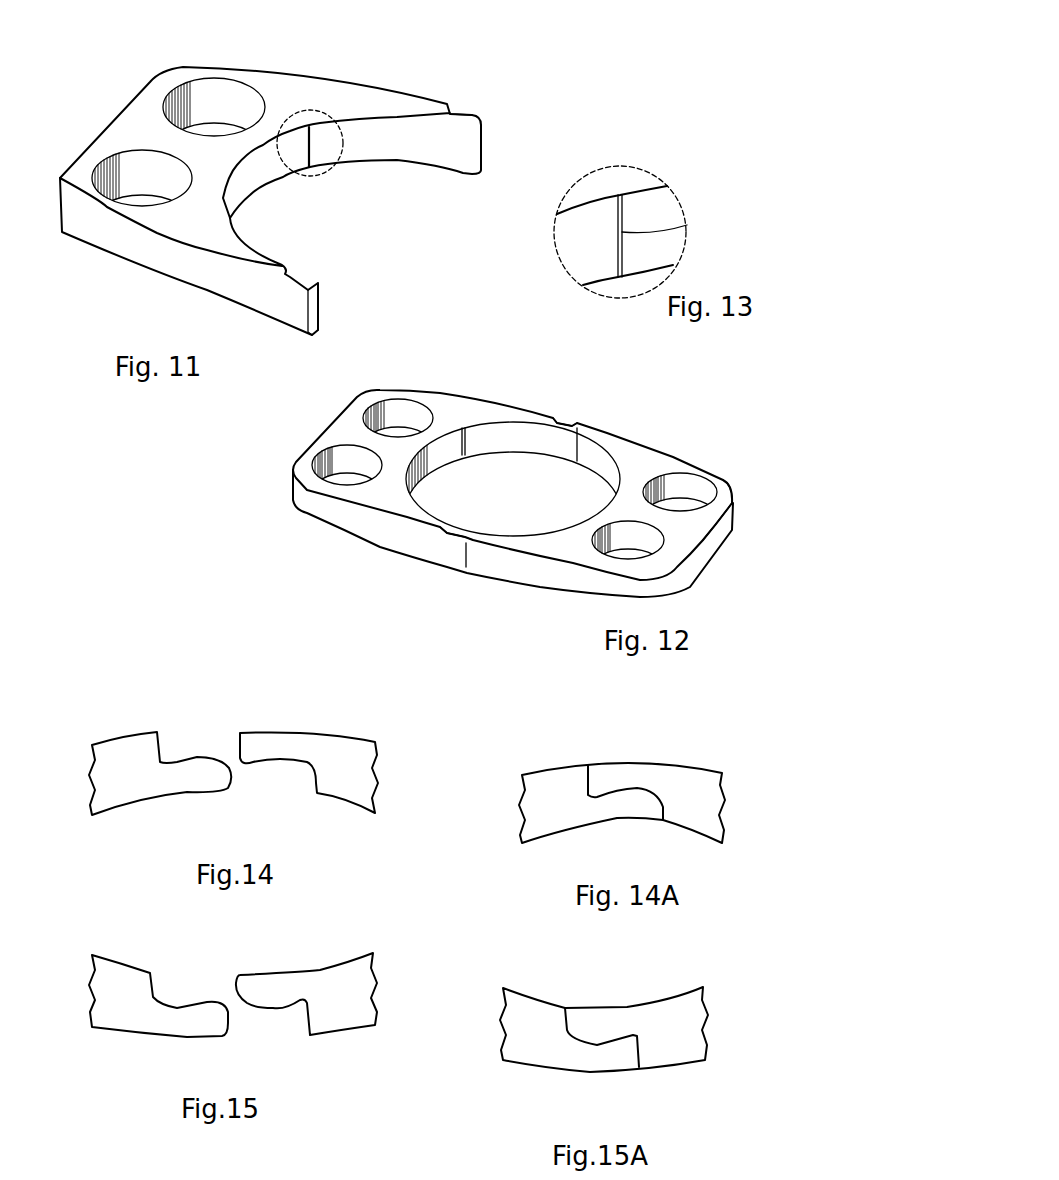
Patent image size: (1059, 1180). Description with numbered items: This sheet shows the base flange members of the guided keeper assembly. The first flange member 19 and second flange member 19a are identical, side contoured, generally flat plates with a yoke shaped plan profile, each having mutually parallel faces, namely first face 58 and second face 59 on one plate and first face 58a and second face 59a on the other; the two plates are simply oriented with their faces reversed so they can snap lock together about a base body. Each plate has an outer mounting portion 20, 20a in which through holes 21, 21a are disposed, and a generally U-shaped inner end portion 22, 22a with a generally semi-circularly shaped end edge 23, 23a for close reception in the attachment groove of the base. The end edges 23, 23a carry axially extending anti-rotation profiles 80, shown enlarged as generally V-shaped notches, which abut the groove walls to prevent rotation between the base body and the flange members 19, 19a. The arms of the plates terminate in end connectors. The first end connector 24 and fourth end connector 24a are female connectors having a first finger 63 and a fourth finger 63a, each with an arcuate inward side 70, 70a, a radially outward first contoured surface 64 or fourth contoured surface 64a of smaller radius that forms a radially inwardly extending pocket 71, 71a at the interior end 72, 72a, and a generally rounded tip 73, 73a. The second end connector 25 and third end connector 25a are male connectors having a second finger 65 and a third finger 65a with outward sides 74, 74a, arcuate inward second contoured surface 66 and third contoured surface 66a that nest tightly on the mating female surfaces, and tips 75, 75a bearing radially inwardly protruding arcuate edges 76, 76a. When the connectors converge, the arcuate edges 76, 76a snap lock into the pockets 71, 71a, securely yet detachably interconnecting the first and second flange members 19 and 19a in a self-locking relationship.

In FIG. 11, the first flange member 19 is at (77, 253).
In FIG. 13, the first flange member 19 is at (598, 190).
In FIG. 12, the first flange member 19 is at (305, 517).
In FIG. 14, the first flange member 19 is at (83, 745).
In FIG. 14A, the first flange member 19 is at (517, 767).
In FIG. 15, the first flange member 19 is at (88, 952).
In FIG. 15A, the first flange member 19 is at (500, 983).
In FIG. 12, the second flange member 19a is at (737, 482).
In FIG. 14, the second flange member 19a is at (383, 738).
In FIG. 14A, the second flange member 19a is at (727, 770).
In FIG. 15, the second flange member 19a is at (375, 950).
In FIG. 15A, the second flange member 19a is at (703, 982).
In FIG. 11, the outer mounting portion 20 is at (128, 117).
In FIG. 12, the outer mounting portion 20 is at (347, 425).
In FIG. 12, the outer mounting portion 20a is at (693, 533).
In FIG. 11, the through hole 21 is at (208, 90).
In FIG. 12, the through hole 21 is at (388, 407).
In FIG. 12, the through hole 21a is at (692, 483).
In FIG. 11, the inner end portion 22 is at (398, 102).
In FIG. 12, the inner end portion 22 is at (523, 410).
In FIG. 14, the inner end portion 22 is at (90, 803).
In FIG. 14A, the inner end portion 22 is at (522, 822).
In FIG. 15, the inner end portion 22 is at (92, 1012).
In FIG. 15A, the inner end portion 22 is at (520, 1043).
In FIG. 12, the inner end portion 22a is at (610, 435).
In FIG. 15, the inner end portion 22a is at (370, 973).
In FIG. 15A, the inner end portion 22a is at (707, 1017).
In FIG. 11, the end edge 23 is at (383, 150).
In FIG. 12, the end edge 23 is at (430, 463).
In FIG. 12, the end edge 23a is at (602, 467).
In FIG. 11, the first end connector 24 is at (445, 110).
In FIG. 12, the first end connector 24 is at (560, 428).
In FIG. 14, the first end connector 24 is at (117, 750).
In FIG. 14A, the first end connector 24 is at (547, 770).
In FIG. 12, the fourth end connector 24a is at (460, 523).
In FIG. 15, the fourth end connector 24a is at (363, 1023).
In FIG. 15A, the fourth end connector 24a is at (673, 1063).
In FIG. 11, the second end connector 25 is at (285, 318).
In FIG. 12, the second end connector 25 is at (450, 542).
In FIG. 15, the second end connector 25 is at (105, 1023).
In FIG. 15A, the second end connector 25 is at (530, 1057).
In FIG. 12, the third end connector 25a is at (567, 420).
In FIG. 14, the third end connector 25a is at (347, 740).
In FIG. 14A, the third end connector 25a is at (683, 775).
In FIG. 11, the first face 58 is at (298, 87).
In FIG. 12, the first face 58 is at (457, 407).
In FIG. 14, the first face 58 is at (87, 768).
In FIG. 14A, the first face 58 is at (533, 830).
In FIG. 15, the first face 58 is at (92, 983).
In FIG. 15A, the first face 58 is at (508, 1018).
In FIG. 12, the first face 58a is at (553, 592).
In FIG. 11, the second face 59 is at (160, 283).
In FIG. 12, the second face 59 is at (377, 543).
In FIG. 12, the second face 59a is at (650, 455).
In FIG. 14, the second face 59a is at (370, 777).
In FIG. 14A, the second face 59a is at (717, 803).
In FIG. 15, the second face 59a is at (368, 998).
In FIG. 15A, the second face 59a is at (703, 1045).
In FIG. 11, the first finger 63 is at (458, 173).
In FIG. 14, the first finger 63 is at (230, 783).
In FIG. 14A, the first finger 63 is at (650, 820).
In FIG. 15, the fourth finger 63a is at (237, 977).
In FIG. 15A, the fourth finger 63a is at (570, 1007).
In FIG. 11, the first contoured surface 64 is at (473, 117).
In FIG. 14, the first contoured surface 64 is at (195, 755).
In FIG. 15, the fourth contoured surface 64a is at (267, 1008).
In FIG. 15, the second finger 65 is at (227, 1020).
In FIG. 15A, the second finger 65 is at (628, 1067).
In FIG. 14, the third finger 65a is at (250, 735).
In FIG. 14A, the third finger 65a is at (595, 762).
In FIG. 15, the second contoured surface 66 is at (172, 1005).
In FIG. 14, the third contoured surface 66a is at (295, 763).
In FIG. 14, the inward side 70 is at (163, 797).
In FIG. 14A, the inward side 70 is at (598, 823).
In FIG. 15, the inward side 70a is at (297, 972).
In FIG. 15A, the inward side 70a is at (623, 1007).
In FIG. 14, the pocket 71 is at (163, 757).
In FIG. 14A, the pocket 71 is at (592, 793).
In FIG. 15, the pocket 71a is at (300, 1017).
In FIG. 15A, the pocket 71a is at (637, 1038).
In FIG. 14, the interior end 72 is at (153, 740).
In FIG. 15, the interior end 72a is at (320, 1000).
In FIG. 14, the rounded tip 73 is at (233, 780).
In FIG. 15, the rounded tip 73a is at (233, 988).
In FIG. 15, the outward side 74 is at (183, 1040).
In FIG. 15A, the outward side 74 is at (577, 1072).
In FIG. 14, the outward side 74a is at (308, 731).
In FIG. 14A, the outward side 74a is at (648, 760).
In FIG. 15, the tip 75 is at (228, 1023).
In FIG. 15A, the tip 75 is at (640, 1058).
In FIG. 14, the tip 75a is at (235, 738).
In FIG. 15, the arcuate edge 76 is at (220, 1002).
In FIG. 15A, the arcuate edge 76 is at (632, 1037).
In FIG. 14, the arcuate edge 76a is at (243, 763).
In FIG. 14A, the arcuate edge 76a is at (592, 793).
In FIG. 11, the anti-rotation profile 80 is at (313, 153).
In FIG. 13, the anti-rotation profile 80 is at (685, 227).
In FIG. 12, the anti-rotation profile 80 is at (467, 430).